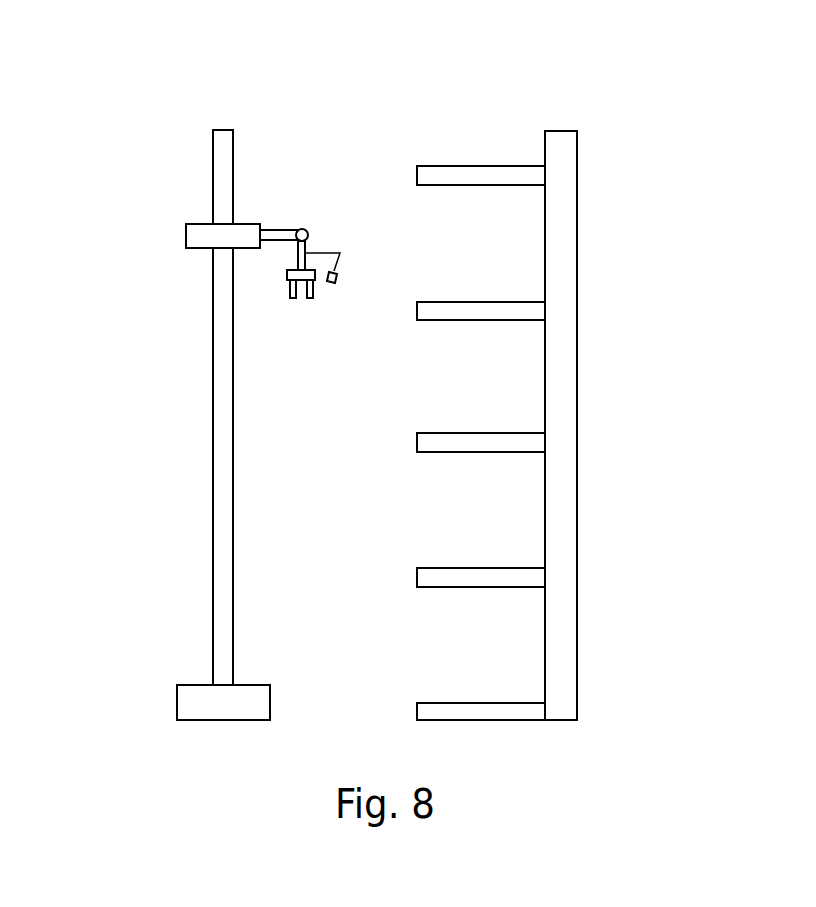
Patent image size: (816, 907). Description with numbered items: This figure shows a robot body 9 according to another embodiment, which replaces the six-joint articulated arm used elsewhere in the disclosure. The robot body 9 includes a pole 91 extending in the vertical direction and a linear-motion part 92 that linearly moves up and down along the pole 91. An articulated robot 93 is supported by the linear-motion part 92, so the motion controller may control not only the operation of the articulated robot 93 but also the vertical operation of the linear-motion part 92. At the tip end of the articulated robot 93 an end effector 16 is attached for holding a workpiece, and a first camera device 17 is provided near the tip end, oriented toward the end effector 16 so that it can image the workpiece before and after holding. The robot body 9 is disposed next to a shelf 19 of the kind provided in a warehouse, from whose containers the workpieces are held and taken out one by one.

The robot body 9 is at (128, 91).
The pole 91 is at (212, 462).
The linear-motion part 92 is at (185, 238).
The articulated robot 93 is at (310, 233).
The end effector 16 is at (287, 293).
The first camera device 17 is at (343, 281).
The shelf 19 is at (578, 241).